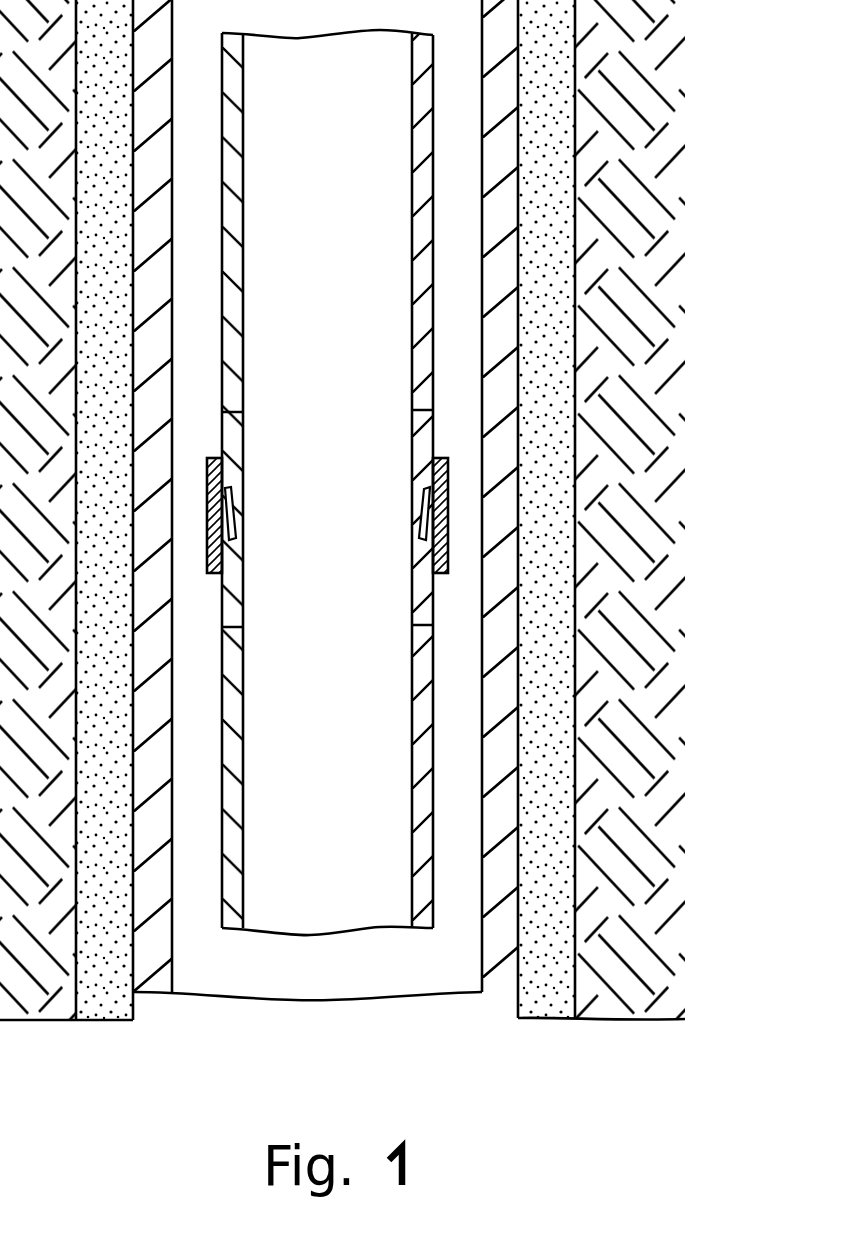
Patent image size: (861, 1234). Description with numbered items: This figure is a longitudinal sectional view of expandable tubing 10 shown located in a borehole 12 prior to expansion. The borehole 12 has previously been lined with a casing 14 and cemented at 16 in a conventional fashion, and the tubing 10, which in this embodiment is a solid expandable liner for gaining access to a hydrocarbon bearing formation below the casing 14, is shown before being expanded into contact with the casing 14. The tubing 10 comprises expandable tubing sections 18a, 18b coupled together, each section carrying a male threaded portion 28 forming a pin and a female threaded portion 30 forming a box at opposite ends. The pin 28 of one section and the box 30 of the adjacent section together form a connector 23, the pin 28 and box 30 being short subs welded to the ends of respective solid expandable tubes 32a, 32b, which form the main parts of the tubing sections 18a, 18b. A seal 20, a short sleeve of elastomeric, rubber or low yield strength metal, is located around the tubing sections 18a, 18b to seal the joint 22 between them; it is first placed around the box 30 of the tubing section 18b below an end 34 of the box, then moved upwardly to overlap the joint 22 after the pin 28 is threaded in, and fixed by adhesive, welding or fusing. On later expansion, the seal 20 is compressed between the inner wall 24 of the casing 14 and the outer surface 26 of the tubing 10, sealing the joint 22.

The expandable tubing 10 is at (472, 482).
The borehole 12 is at (578, 614).
The casing 14 is at (497, 673).
The cement 16 is at (533, 770).
The expandable tubing section 18a is at (327, 222).
The expandable tubing section 18b is at (479, 776).
The seal 20 is at (448, 533).
The joint 22 is at (471, 508).
The connector 23 is at (383, 536).
The inner wall 24 is at (483, 963).
The outer surface 26 is at (433, 841).
The male threaded portion 28 is at (243, 431).
The female threaded portion 30 is at (233, 613).
The solid expandable tube 32a is at (232, 328).
The solid expandable tube 32b is at (232, 830).
The end of the box 34 is at (418, 488).